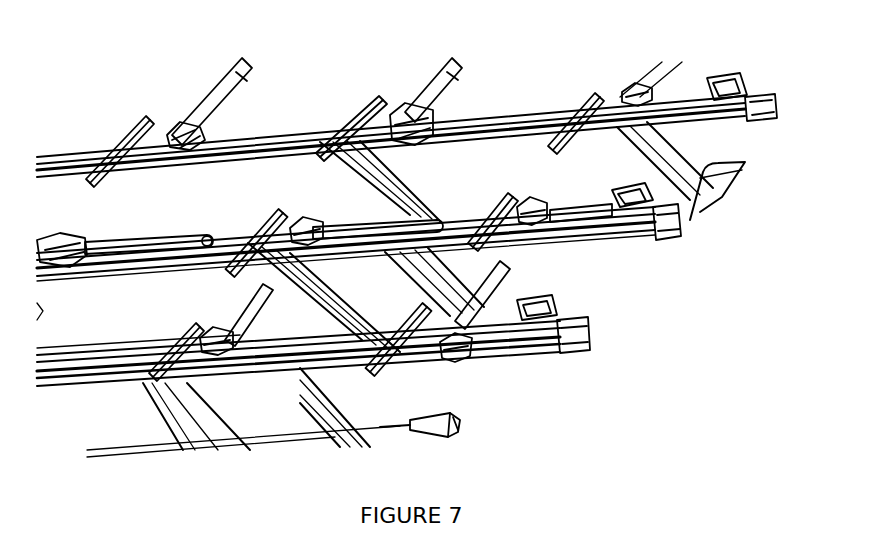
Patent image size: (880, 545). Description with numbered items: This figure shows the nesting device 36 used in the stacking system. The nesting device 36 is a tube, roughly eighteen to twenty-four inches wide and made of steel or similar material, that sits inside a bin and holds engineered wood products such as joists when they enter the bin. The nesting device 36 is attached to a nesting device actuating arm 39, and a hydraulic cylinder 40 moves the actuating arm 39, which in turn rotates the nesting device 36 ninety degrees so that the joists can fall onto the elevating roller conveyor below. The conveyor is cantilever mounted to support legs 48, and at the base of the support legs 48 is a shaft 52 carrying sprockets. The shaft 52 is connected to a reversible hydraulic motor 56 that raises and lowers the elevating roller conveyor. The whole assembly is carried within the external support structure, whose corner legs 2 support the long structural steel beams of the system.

The corner leg 2 is at (725, 185).
The nesting device 36 is at (188, 112).
The nesting device actuating arm 39 is at (200, 135).
The hydraulic cylinder 40 is at (730, 125).
The support leg 48 is at (410, 186).
The shaft 52 is at (110, 340).
The hydraulic motor 56 is at (567, 307).